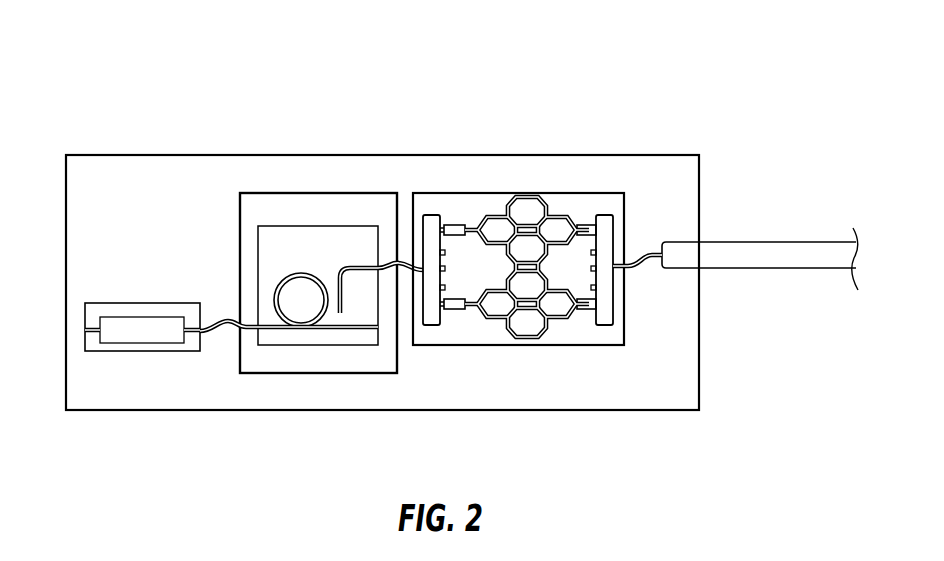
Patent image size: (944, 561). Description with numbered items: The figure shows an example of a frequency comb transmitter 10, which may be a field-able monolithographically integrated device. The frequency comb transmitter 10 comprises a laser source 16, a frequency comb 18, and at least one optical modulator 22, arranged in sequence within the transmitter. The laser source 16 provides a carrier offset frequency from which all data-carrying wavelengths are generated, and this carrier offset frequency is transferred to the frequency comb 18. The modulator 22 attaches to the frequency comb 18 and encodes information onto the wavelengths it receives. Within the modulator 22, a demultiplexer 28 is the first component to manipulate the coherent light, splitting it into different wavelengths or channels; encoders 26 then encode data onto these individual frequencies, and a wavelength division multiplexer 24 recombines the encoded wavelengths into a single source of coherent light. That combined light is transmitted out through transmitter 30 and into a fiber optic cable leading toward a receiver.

The frequency comb transmitter 10 is at (221, 70).
The laser source 16 is at (126, 293).
The frequency comb 18 is at (210, 247).
The optical modulator 22 is at (578, 360).
The wavelength division multiplexer 24 is at (605, 215).
The encoders 26 is at (523, 196).
The demultiplexer 28 is at (432, 215).
The transmitter 30 is at (781, 246).